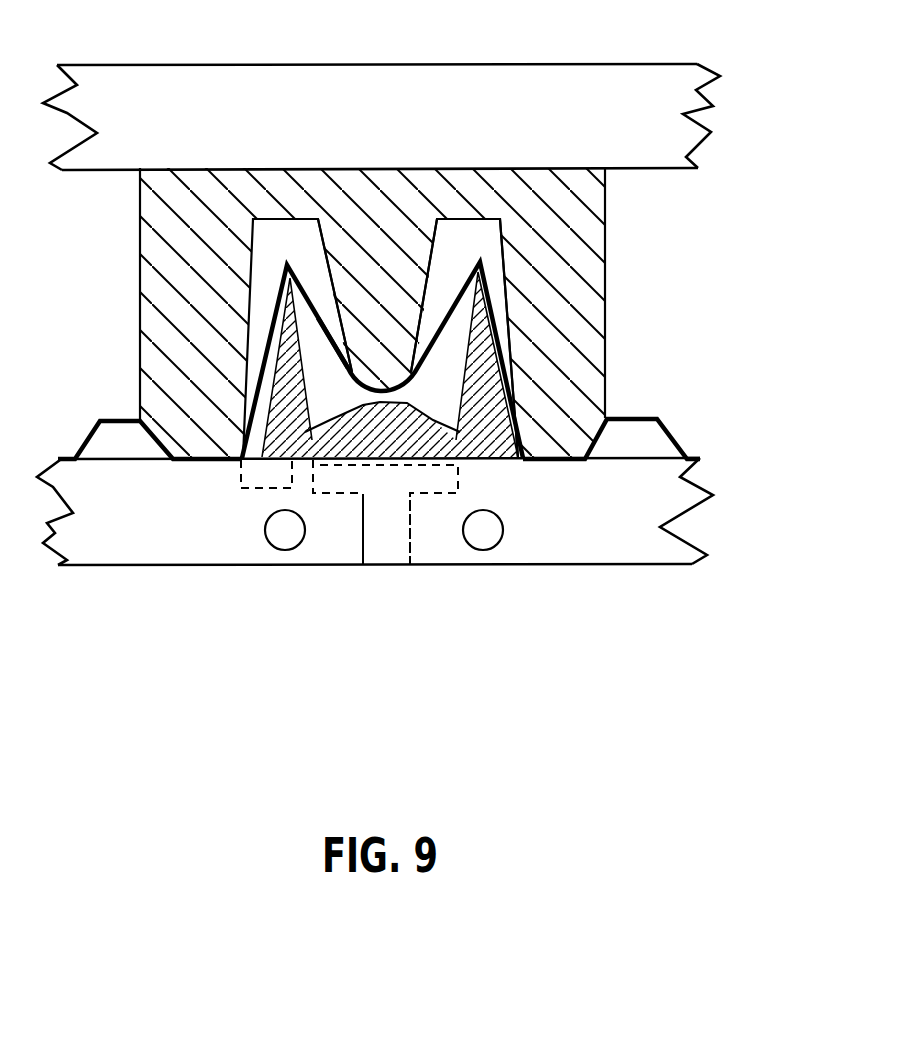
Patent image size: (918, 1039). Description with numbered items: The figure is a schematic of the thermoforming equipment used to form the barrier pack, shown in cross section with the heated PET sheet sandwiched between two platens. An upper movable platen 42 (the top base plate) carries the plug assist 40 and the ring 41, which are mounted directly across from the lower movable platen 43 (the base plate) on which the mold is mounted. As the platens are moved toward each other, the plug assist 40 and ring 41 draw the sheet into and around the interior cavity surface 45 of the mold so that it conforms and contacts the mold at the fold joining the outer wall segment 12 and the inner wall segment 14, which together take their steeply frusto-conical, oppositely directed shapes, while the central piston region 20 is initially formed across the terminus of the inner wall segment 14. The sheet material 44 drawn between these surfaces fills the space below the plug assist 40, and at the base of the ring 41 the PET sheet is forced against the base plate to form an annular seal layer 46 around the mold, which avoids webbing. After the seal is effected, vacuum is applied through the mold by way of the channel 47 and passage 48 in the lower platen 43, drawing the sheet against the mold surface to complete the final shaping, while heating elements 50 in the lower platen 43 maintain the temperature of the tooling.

The outer wall segment 12 is at (492, 312).
The inner wall segment 14 is at (340, 353).
The central piston region 20 is at (440, 410).
The mold insert 40 is at (382, 278).
The die block 41 is at (572, 321).
The upper platen 42 is at (683, 145).
The lower platen 43 is at (672, 507).
The filler material 44 is at (305, 430).
The cavity 45 is at (481, 258).
The seal layer 46 is at (673, 433).
The vent channel 47 is at (363, 455).
The passage 48 is at (388, 527).
The heating element 50 is at (278, 533).